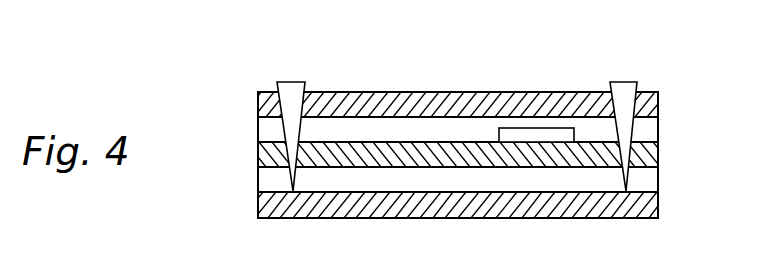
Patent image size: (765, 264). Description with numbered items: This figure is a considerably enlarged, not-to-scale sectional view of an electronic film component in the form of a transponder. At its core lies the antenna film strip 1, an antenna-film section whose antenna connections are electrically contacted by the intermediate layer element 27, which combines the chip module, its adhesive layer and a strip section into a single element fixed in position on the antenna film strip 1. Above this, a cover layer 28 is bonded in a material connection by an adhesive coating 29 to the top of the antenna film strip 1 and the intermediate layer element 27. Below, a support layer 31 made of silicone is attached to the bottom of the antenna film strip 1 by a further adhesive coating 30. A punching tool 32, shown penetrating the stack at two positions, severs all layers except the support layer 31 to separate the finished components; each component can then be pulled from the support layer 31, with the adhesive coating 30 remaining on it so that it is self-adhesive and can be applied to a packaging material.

The antenna film strip 1 is at (658, 147).
The intermediate layer element 27 is at (538, 135).
The cover layer 28 is at (658, 97).
The adhesive coating 29 is at (658, 122).
The adhesive coating 30 is at (658, 172).
The support layer 31 is at (658, 197).
The punching tool 32 is at (287, 89).